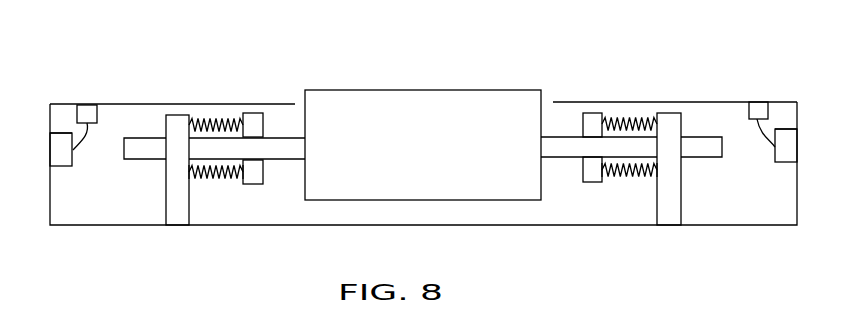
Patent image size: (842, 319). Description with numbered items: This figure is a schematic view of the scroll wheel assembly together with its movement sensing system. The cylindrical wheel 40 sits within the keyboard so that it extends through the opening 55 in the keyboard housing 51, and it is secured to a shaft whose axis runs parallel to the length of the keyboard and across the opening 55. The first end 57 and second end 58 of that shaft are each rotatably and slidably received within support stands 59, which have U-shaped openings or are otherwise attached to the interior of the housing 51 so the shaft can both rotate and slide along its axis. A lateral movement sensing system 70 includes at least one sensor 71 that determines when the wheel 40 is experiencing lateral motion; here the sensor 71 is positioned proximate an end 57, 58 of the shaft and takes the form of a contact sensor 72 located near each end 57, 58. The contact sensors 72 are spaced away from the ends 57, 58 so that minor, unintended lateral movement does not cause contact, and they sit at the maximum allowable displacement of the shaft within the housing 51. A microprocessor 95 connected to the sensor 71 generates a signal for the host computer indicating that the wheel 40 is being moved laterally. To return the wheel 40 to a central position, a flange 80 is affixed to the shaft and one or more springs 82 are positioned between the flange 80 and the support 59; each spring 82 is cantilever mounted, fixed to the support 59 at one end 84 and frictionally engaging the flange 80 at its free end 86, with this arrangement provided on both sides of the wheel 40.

The wheel 40 is at (413, 98).
The keyboard housing 51 is at (575, 102).
The opening 55 is at (296, 101).
The first end 57 is at (124, 147).
The second end 58 is at (633, 128).
The support stands 59 is at (175, 116).
The lateral movement sensing system 70 is at (70, 195).
The sensor 71 is at (63, 160).
The contact sensor 72 is at (57, 133).
The flange 80 is at (258, 174).
The spring 82 is at (210, 177).
The end 84 is at (193, 177).
The free end 86 is at (240, 177).
The microprocessor 95 is at (90, 108).